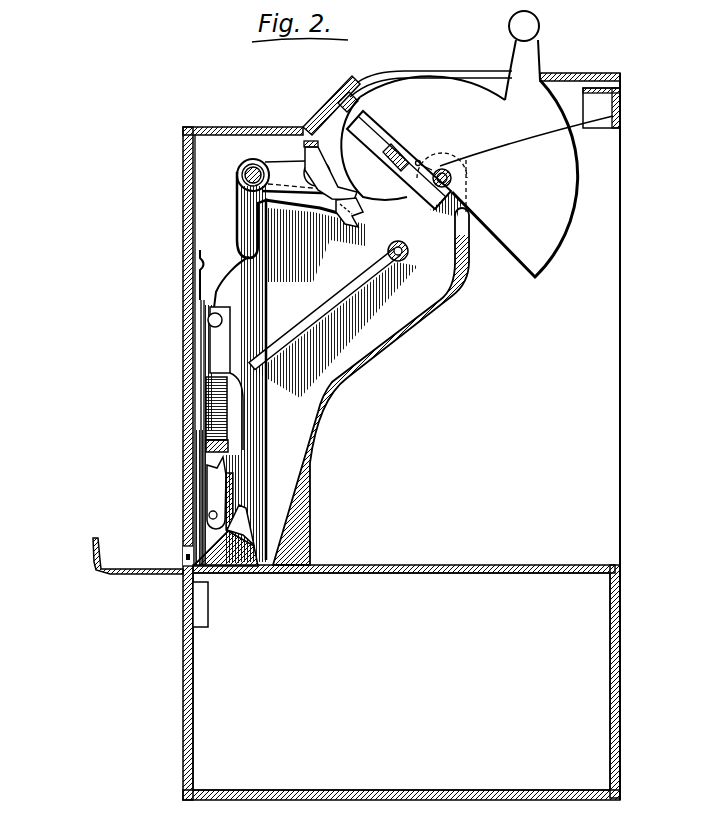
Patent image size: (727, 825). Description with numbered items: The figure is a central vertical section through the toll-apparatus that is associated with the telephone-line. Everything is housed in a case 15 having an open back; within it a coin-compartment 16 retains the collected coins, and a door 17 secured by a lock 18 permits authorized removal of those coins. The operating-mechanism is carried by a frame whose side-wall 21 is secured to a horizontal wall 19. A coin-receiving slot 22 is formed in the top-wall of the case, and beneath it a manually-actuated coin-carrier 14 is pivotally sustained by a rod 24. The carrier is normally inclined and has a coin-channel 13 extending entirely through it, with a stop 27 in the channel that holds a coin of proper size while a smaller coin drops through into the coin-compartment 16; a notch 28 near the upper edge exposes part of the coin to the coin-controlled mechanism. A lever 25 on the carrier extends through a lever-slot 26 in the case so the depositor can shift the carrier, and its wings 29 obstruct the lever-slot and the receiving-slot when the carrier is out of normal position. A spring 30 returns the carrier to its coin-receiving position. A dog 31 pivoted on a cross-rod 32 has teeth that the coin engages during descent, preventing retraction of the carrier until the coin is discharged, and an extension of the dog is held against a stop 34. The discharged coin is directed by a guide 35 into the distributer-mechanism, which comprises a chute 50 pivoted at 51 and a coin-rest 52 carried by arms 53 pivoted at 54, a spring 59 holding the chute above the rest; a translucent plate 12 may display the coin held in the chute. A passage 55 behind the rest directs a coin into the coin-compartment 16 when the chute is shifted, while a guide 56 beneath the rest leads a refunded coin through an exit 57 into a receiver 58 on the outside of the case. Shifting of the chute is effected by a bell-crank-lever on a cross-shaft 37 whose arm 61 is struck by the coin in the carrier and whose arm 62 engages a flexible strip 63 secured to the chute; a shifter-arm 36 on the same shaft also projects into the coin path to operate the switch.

The translucent plate 12 is at (183, 437).
The coin-channel 13 is at (425, 188).
The coin-carrier 14 is at (423, 138).
The case 15 is at (183, 193).
The coin-compartment 16 is at (406, 681).
The door 17 is at (183, 660).
The lock 18 is at (209, 615).
The horizontal wall 19 is at (456, 566).
The side-wall 21 is at (446, 274).
The coin-receiving slot 22 is at (346, 101).
The rod 24 is at (452, 179).
The lever 25 is at (556, 38).
The lever-slot 26 is at (483, 78).
The stop 27 is at (392, 166).
The notch 28 is at (378, 143).
The wings 29 is at (401, 98).
The spring 30 is at (508, 143).
The dog 31 is at (334, 219).
The cross-rod 32 is at (303, 157).
The stop 34 is at (313, 140).
The guide 35 is at (314, 310).
The shifter-arm 36 is at (275, 167).
The cross-shaft 37 is at (252, 158).
The chute 50 is at (207, 413).
The pivot 51 is at (210, 320).
The coin-rest 52 is at (228, 450).
The arms 53 is at (210, 483).
The pivot 54 is at (209, 515).
The passage 55 is at (257, 519).
The guide 56 is at (168, 578).
The exit 57 is at (187, 550).
The receiver 58 is at (94, 560).
The spring 59 is at (193, 268).
The arm 61 is at (303, 192).
The arm 62 is at (258, 220).
The strip 63 is at (240, 266).